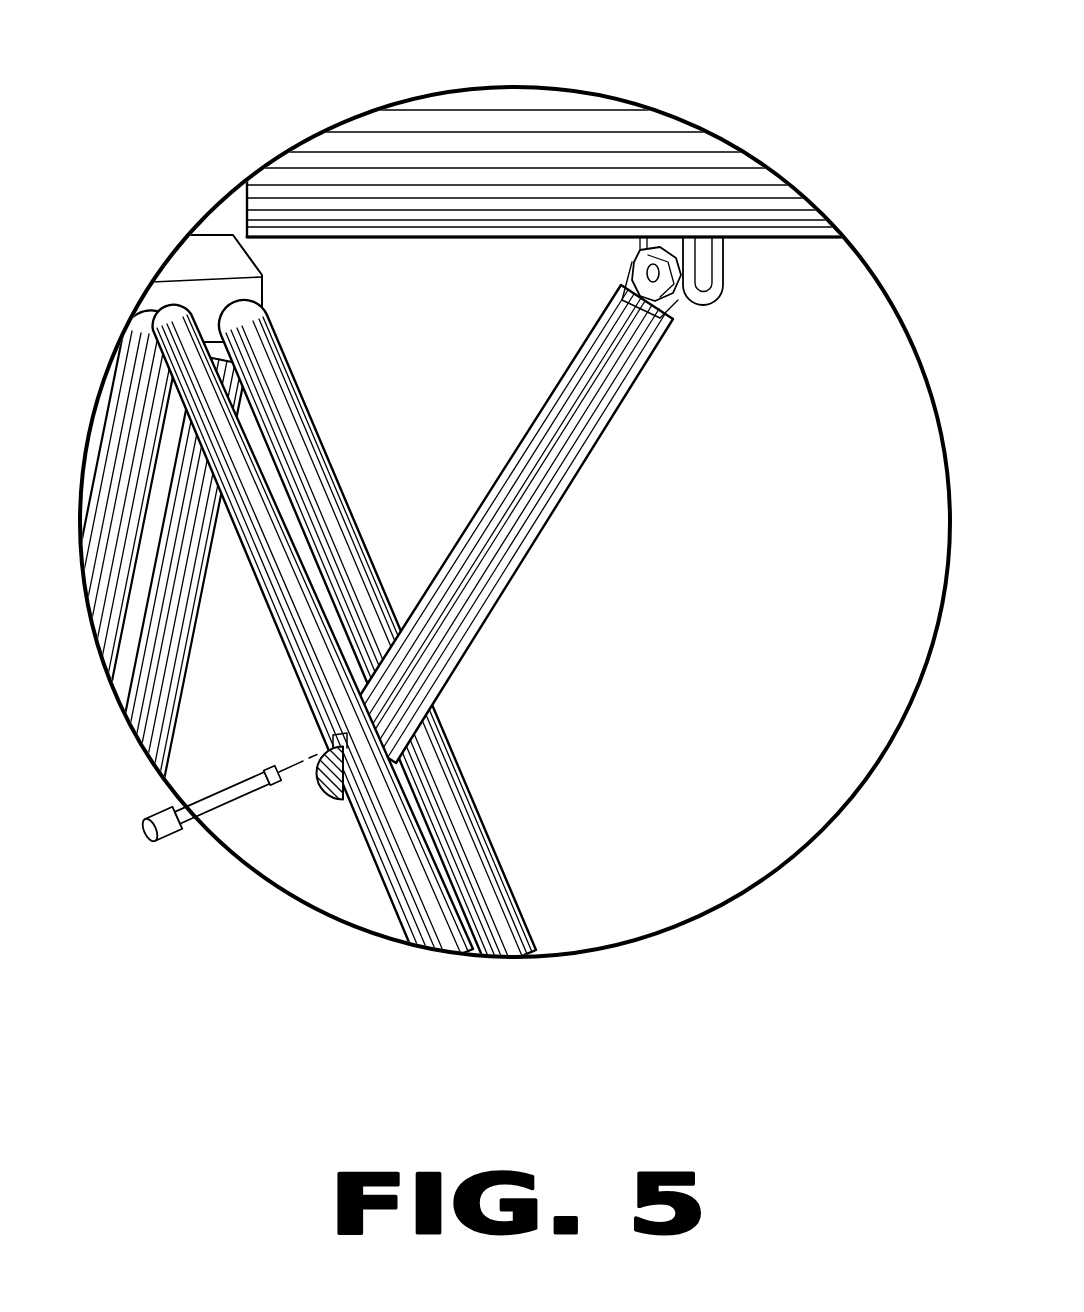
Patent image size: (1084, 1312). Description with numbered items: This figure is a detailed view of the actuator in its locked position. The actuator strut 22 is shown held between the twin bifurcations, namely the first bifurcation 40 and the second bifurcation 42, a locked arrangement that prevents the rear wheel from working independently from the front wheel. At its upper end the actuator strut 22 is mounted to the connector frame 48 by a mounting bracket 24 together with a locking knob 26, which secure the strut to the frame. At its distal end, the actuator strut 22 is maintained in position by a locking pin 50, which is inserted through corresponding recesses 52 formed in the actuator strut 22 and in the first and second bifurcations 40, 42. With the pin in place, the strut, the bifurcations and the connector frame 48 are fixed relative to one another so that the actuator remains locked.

The actuator strut 22 is at (540, 530).
The mounting bracket 24 is at (727, 253).
The locking knob 26 is at (640, 257).
The first bifurcation 40 is at (238, 553).
The second bifurcation 42 is at (347, 520).
The connector frame 48 is at (473, 120).
The locking pin 50 is at (176, 836).
The recesses 52 is at (343, 748).